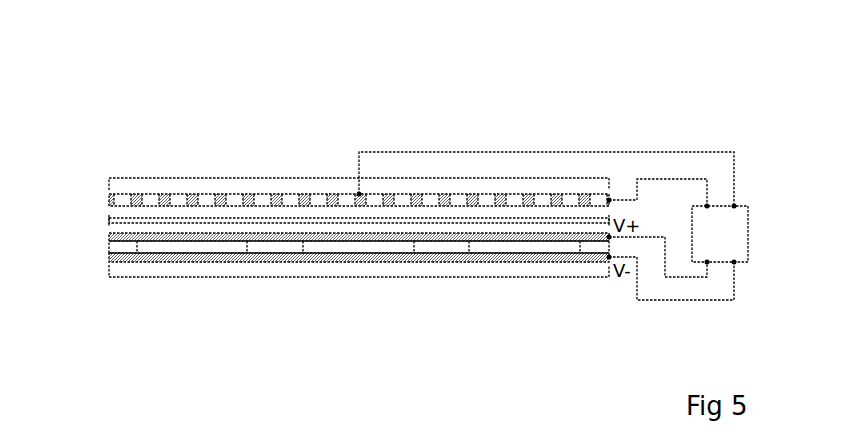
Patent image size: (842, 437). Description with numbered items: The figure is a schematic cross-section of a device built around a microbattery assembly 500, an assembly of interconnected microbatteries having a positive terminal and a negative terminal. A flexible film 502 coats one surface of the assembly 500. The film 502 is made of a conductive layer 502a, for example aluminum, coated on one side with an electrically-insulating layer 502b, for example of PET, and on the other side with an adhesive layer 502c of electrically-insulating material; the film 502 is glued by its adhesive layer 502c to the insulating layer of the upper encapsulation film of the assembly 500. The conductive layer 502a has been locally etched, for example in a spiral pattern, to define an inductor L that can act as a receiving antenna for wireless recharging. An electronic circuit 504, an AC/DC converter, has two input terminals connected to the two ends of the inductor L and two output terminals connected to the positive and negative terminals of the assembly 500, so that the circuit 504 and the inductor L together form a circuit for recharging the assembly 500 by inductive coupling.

The microbattery assembly 500 is at (70, 223).
The flexible film 502 is at (70, 178).
The conductive layer 502a is at (135, 195).
The electrically-insulating layer 502b is at (212, 185).
The adhesive layer 502c is at (259, 213).
The electronic circuit 504 is at (750, 226).
The inductor L is at (332, 193).